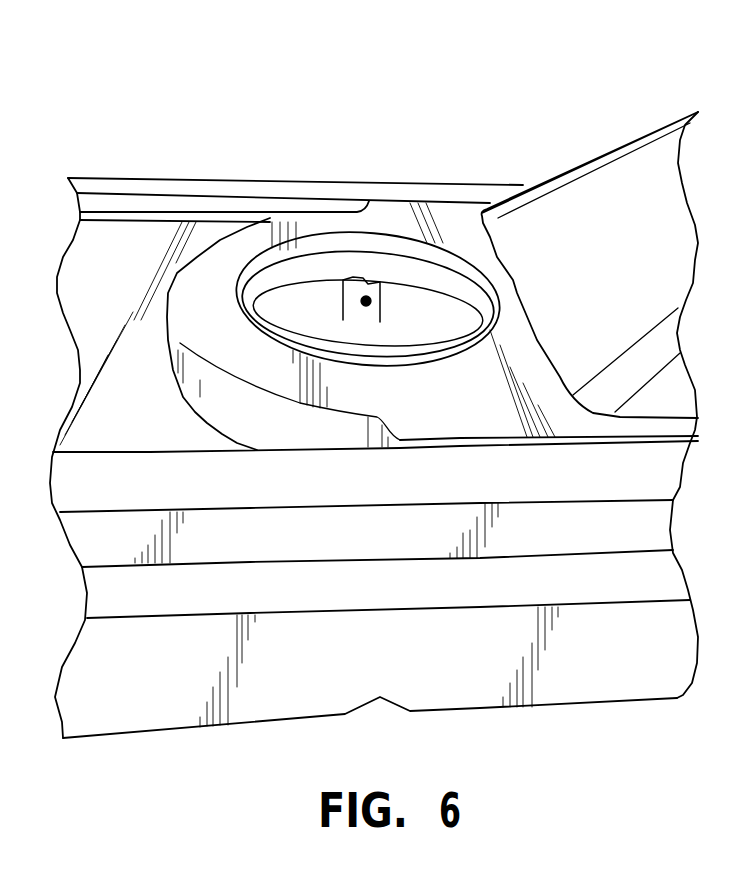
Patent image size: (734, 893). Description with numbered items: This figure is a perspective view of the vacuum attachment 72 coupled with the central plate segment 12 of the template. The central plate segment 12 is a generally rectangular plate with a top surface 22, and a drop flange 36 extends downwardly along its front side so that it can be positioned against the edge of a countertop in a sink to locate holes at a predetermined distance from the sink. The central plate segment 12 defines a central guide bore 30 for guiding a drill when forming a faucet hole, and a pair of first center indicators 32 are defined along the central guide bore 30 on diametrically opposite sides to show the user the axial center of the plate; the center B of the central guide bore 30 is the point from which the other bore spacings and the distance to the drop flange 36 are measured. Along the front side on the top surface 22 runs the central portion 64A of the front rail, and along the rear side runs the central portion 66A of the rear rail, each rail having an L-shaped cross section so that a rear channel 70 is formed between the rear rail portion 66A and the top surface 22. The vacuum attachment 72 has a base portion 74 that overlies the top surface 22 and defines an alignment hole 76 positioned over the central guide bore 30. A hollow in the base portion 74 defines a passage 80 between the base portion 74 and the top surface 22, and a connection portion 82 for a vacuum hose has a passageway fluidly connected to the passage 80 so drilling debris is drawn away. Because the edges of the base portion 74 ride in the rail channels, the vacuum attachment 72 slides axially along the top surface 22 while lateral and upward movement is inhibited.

The central plate segment 12 is at (247, 495).
The top surface 22 is at (143, 227).
The central guide bore 30 is at (427, 305).
The first center indicators 32 is at (365, 277).
The drop flange 36 is at (617, 660).
The central portion of front rail 64A is at (437, 490).
The central portion of rear rail 66A is at (368, 202).
The rear channel 70 is at (102, 235).
The vacuum attachment 72 is at (656, 140).
The base portion 74 is at (257, 363).
The alignment hole 76 is at (272, 228).
The passage 80 is at (258, 305).
The connection portion 82 is at (643, 353).
The center of central guide bore B is at (366, 303).